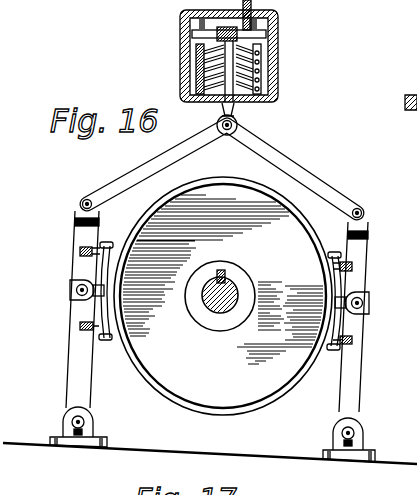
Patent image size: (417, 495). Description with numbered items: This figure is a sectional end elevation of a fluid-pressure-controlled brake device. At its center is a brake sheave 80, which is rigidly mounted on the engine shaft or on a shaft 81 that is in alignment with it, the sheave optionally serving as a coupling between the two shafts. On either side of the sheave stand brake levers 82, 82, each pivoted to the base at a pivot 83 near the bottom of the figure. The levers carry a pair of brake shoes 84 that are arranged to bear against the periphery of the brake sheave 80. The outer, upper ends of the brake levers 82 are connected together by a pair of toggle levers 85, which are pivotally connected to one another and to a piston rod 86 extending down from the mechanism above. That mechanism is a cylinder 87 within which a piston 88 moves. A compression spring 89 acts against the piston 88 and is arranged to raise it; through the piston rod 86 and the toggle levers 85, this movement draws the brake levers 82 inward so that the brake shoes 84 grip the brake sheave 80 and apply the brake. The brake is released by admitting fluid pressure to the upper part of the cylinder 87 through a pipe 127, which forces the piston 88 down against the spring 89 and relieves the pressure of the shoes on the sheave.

The brake sheave 80 is at (268, 388).
The shaft 81 is at (212, 314).
The brake levers 82 is at (360, 255).
The pivot 83 is at (350, 432).
The brake shoes 84 is at (343, 296).
The toggle levers 85 is at (298, 173).
The piston rod 86 is at (239, 125).
The cylinder 87 is at (190, 62).
The piston 88 is at (278, 42).
The compression spring 89 is at (272, 68).
The pipe 127 is at (262, 6).